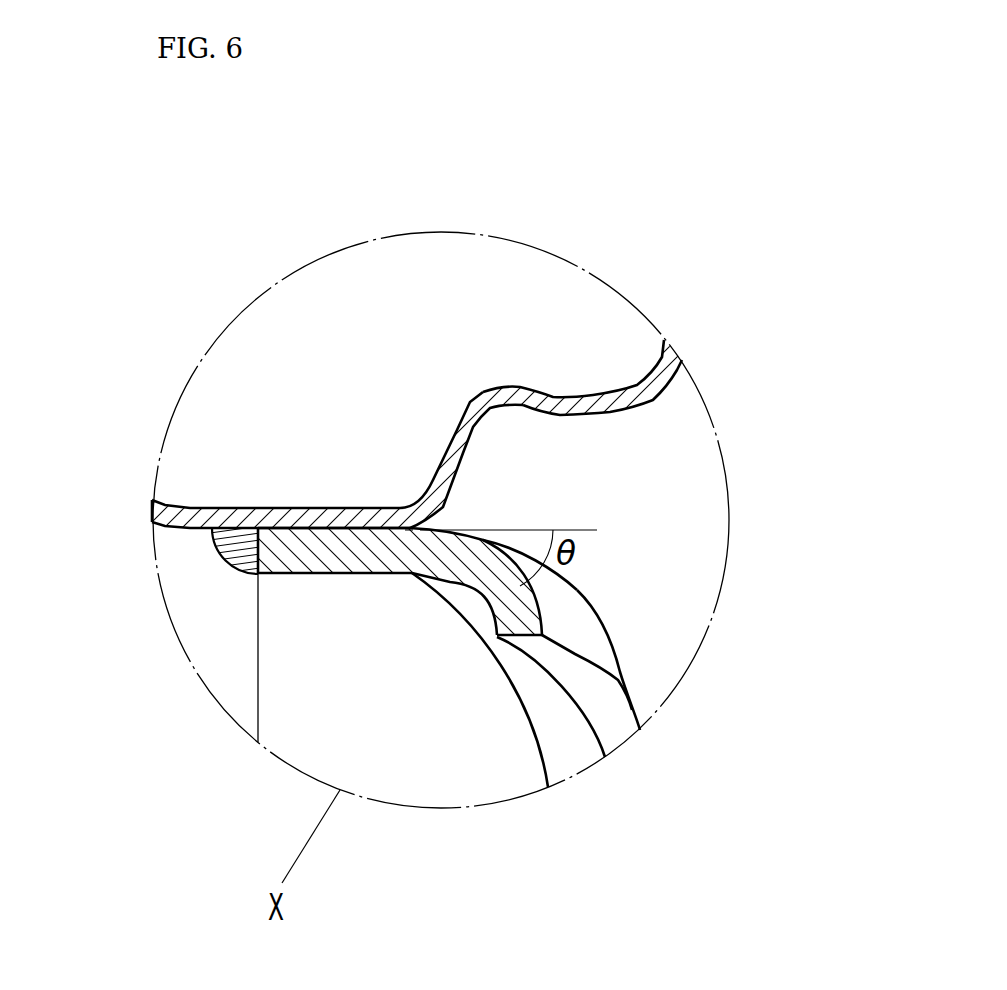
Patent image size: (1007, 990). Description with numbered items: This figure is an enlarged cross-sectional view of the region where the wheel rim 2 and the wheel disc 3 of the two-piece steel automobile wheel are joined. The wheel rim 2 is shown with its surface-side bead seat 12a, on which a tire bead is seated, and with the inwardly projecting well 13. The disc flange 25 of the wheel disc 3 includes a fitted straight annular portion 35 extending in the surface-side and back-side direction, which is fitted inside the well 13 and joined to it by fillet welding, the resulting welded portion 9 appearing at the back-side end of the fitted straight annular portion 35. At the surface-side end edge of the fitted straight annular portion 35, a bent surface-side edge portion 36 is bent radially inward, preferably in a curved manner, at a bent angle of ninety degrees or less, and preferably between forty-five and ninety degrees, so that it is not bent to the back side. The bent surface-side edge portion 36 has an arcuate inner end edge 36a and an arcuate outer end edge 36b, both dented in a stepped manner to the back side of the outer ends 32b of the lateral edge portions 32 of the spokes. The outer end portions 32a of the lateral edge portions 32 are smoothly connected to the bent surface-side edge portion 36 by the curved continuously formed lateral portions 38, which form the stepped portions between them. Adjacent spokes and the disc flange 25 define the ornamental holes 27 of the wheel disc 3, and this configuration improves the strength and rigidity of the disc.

The wheel rim 2 is at (505, 312).
The wheel disc 3 is at (509, 563).
The welded portion 9 is at (213, 545).
The surface-side bead seat 12a is at (578, 393).
The well 13 is at (277, 517).
The disc flange 25 is at (248, 572).
The ornamental hole 27 is at (613, 725).
The lateral edge portion 32 is at (663, 508).
The outer end portion of lateral edge portion 32a is at (590, 608).
The outer end of lateral edge portion 32b is at (582, 593).
The fitted straight annular portion 35 is at (379, 670).
The bent surface-side edge portion 36 is at (501, 670).
The arcuate inner end edge 36a is at (488, 530).
The arcuate outer end edge 36b is at (519, 596).
The continuously formed lateral portion 38 is at (578, 633).